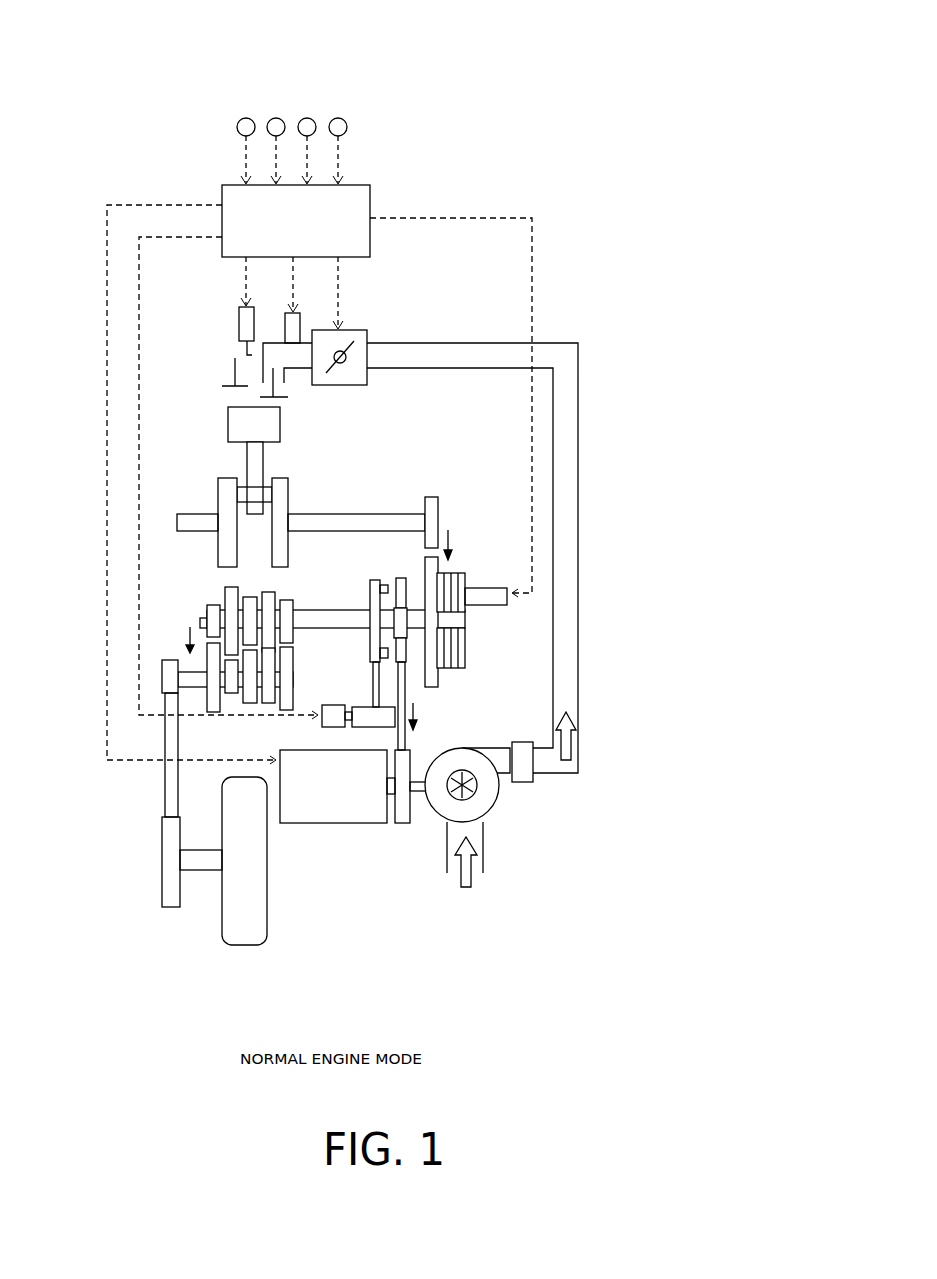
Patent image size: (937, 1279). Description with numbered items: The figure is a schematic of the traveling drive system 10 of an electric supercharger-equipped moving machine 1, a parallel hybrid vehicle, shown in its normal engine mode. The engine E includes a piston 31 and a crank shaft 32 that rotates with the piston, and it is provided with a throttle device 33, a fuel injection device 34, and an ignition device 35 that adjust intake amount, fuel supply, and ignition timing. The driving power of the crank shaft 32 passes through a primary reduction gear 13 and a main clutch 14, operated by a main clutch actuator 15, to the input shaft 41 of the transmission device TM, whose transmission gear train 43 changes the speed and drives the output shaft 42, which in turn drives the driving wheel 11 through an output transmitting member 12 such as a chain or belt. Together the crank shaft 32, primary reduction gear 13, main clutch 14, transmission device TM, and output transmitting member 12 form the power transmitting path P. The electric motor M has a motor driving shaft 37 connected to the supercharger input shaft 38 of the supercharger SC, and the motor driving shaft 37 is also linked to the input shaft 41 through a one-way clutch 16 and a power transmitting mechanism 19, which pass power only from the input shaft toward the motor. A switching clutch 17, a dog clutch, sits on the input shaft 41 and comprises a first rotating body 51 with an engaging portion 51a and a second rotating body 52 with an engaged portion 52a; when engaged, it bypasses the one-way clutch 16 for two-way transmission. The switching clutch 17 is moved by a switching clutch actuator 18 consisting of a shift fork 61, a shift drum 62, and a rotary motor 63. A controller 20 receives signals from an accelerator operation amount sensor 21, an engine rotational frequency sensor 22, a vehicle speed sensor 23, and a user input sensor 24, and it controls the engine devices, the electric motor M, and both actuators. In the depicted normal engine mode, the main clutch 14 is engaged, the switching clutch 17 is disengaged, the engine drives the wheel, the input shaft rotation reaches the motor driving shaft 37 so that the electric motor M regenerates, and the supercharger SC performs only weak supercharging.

The electric supercharger-equipped moving machine 1 is at (123, 112).
The traveling drive system 10 is at (514, 181).
The driving wheel 11 is at (252, 947).
The output transmitting member 12 is at (138, 755).
The primary reduction gear 13 is at (438, 567).
The main clutch 14 is at (465, 648).
The main clutch actuator 15 is at (485, 590).
The one-way clutch 16 is at (437, 670).
The switching clutch 17 is at (358, 539).
The switching clutch actuator 18 is at (337, 730).
The power transmitting mechanism 19 is at (407, 725).
The controller 20 is at (371, 200).
The accelerator operation amount sensor 21 is at (245, 118).
The engine rotational frequency sensor 22 is at (276, 118).
The vehicle speed sensor 23 is at (307, 118).
The user input sensor 24 is at (338, 118).
The piston 31 is at (230, 422).
The crank shaft 32 is at (308, 520).
The throttle device 33 is at (367, 332).
The fuel injection device 34 is at (300, 312).
The ignition device 35 is at (240, 325).
The motor driving shaft 37 is at (390, 826).
The supercharger input shaft 38 is at (417, 795).
The input shaft 41 is at (207, 610).
The output shaft 42 is at (185, 677).
The transmission gear train 43 is at (225, 602).
The first rotating body 51 is at (340, 559).
The engaging portion 51a is at (370, 587).
The second rotating body 52 is at (393, 559).
The engaged portion 52a is at (398, 578).
The shift fork 61 is at (373, 695).
The shift drum 62 is at (358, 707).
The rotary motor 63 is at (322, 722).
The engine E is at (182, 500).
The transmission device TM is at (162, 618).
The power transmitting path P is at (128, 800).
The electric motor M is at (367, 825).
The electric supercharger SC is at (484, 750).